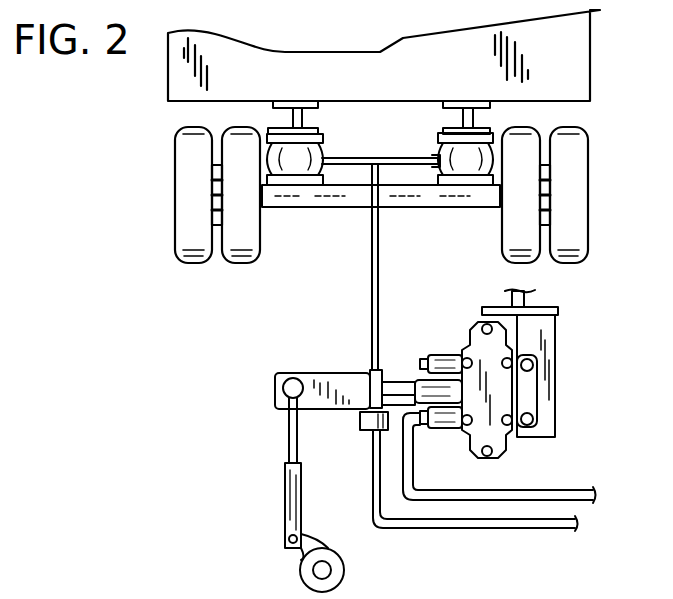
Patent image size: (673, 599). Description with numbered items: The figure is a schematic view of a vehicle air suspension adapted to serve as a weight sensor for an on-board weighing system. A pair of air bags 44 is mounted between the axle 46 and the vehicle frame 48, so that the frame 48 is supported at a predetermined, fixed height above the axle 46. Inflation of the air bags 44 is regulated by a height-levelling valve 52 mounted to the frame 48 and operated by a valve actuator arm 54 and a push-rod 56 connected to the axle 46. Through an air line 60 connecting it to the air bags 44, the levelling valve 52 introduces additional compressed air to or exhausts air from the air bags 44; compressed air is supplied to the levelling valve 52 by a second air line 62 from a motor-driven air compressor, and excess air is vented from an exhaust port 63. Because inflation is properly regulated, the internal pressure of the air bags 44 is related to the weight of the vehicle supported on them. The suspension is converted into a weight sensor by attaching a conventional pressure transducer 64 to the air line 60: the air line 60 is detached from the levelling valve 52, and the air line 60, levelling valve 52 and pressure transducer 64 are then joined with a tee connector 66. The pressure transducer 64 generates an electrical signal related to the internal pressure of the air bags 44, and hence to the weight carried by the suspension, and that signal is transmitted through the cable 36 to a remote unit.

The cable 36 is at (525, 530).
The air bags 44 is at (270, 157).
The axle 46 is at (330, 208).
The frame 48 is at (318, 105).
The height-levelling valve 52 is at (500, 440).
The valve actuator arm 54 is at (302, 373).
The push-rod 56 is at (288, 445).
The air line 60 is at (380, 256).
The second air line 62 is at (558, 497).
The exhaust port 63 is at (420, 365).
The pressure transducer 64 is at (360, 420).
The tee connector 66 is at (368, 385).